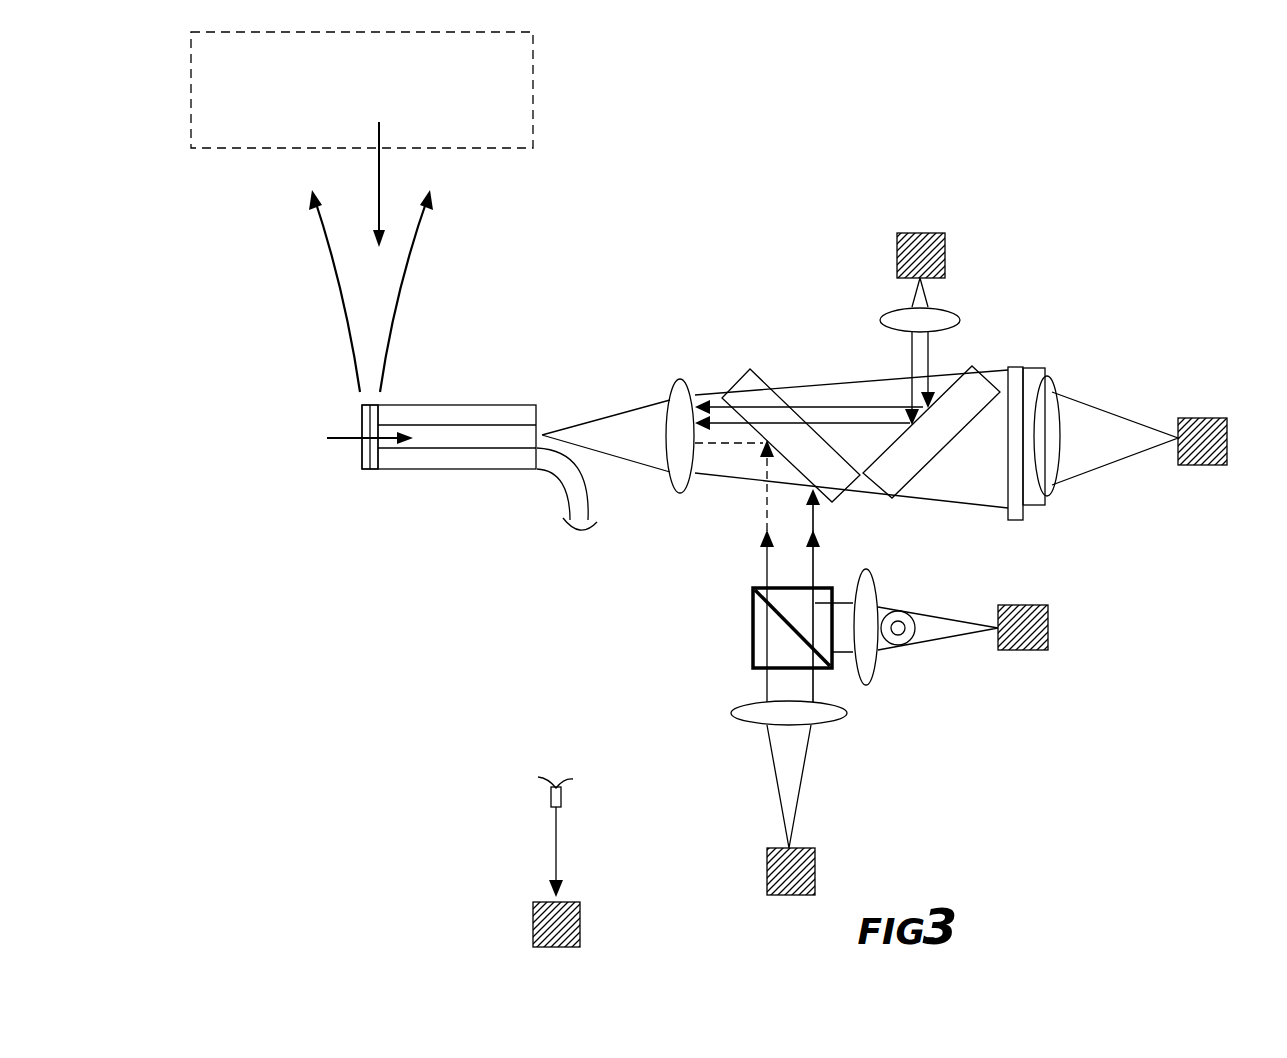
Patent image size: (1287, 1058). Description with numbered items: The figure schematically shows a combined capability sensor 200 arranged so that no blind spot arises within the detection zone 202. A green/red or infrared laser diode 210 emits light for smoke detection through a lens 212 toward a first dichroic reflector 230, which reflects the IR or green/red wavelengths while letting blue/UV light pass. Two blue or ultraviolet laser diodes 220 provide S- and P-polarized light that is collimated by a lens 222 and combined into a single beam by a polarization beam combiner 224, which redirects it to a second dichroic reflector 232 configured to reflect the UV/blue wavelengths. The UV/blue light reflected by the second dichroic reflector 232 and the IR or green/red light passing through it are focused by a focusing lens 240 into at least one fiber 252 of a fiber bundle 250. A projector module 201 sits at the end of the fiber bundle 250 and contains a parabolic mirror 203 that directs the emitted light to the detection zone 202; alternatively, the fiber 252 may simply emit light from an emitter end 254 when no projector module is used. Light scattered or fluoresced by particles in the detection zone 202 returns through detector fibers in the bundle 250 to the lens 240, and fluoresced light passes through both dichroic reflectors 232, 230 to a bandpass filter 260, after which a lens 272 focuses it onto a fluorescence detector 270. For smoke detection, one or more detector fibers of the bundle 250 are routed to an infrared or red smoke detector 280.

The combined capability sensor 200 is at (1060, 220).
The projector module 201 is at (372, 470).
The detection zone 202 is at (507, 150).
The parabolic mirror 203 is at (378, 420).
The green/red or infrared laser diode 210 is at (923, 233).
The lens 212 is at (943, 315).
The blue or ultraviolet laser diodes 220 is at (1040, 605).
The lens 222 is at (857, 727).
The polarization beam combiner 224 is at (753, 618).
The first dichroic reflector 230 is at (930, 462).
The second dichroic reflector 232 is at (740, 378).
The focusing lens 240 is at (672, 392).
The fiber bundle 250 is at (510, 405).
The fiber 252 is at (466, 440).
The emitter end 254 is at (365, 412).
The bandpass filter 260 is at (1038, 522).
The fluorescence detector 270 is at (1222, 420).
The lens 272 is at (1052, 385).
The infrared or red smoke detector 280 is at (583, 900).